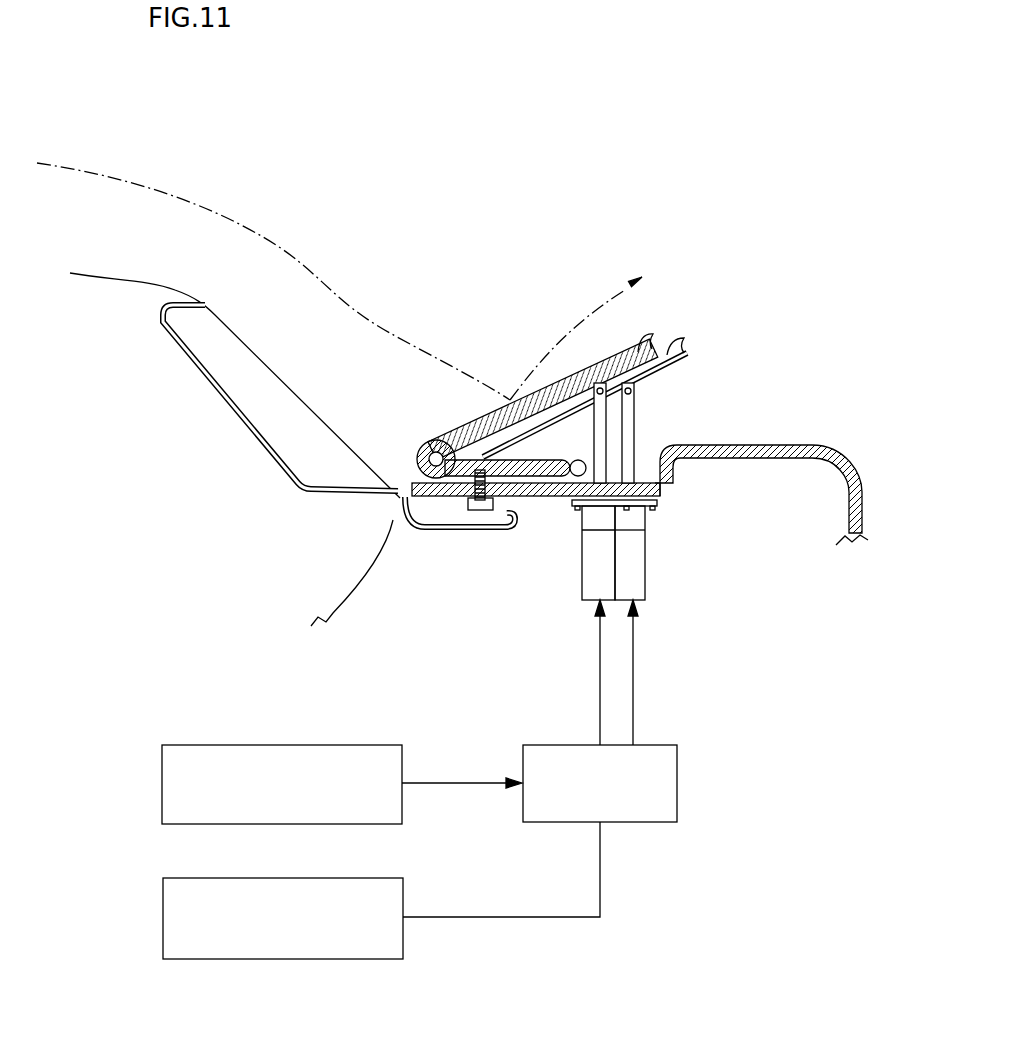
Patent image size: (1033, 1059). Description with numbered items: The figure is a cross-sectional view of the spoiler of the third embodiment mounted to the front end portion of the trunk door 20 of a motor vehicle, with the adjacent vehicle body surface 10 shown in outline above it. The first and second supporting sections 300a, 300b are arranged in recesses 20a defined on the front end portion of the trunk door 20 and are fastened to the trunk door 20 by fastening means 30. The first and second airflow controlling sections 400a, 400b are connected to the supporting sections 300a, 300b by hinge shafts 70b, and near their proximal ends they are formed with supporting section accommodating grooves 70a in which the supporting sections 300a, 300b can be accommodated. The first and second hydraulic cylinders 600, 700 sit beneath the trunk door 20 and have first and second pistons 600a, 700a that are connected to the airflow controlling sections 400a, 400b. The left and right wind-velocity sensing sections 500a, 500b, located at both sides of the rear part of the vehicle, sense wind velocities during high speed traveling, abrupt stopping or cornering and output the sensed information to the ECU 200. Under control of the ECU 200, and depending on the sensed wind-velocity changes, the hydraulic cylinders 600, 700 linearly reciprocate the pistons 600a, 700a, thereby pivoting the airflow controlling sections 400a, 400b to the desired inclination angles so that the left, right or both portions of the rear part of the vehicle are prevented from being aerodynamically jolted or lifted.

The roof panel 10 is at (226, 340).
The trunk door 20 is at (830, 467).
The recesses 20a is at (648, 475).
The fastening means 30 is at (470, 508).
The supporting section accommodating grooves 70a is at (525, 420).
The hinge shafts 70b is at (430, 460).
The first supporting section 300a is at (550, 467).
The second supporting section 300b is at (577, 468).
The first airflow controlling section 400a is at (627, 337).
The second airflow controlling section 400b is at (680, 350).
The first hydraulic cylinder 600 is at (595, 592).
The first piston 600a is at (603, 423).
The second hydraulic cylinder 700 is at (638, 588).
The second piston 700a is at (630, 443).
The ECU 200 is at (600, 783).
The left wind-velocity sensing section 500a is at (342, 784).
The right wind-velocity sensing section 500b is at (381, 890).